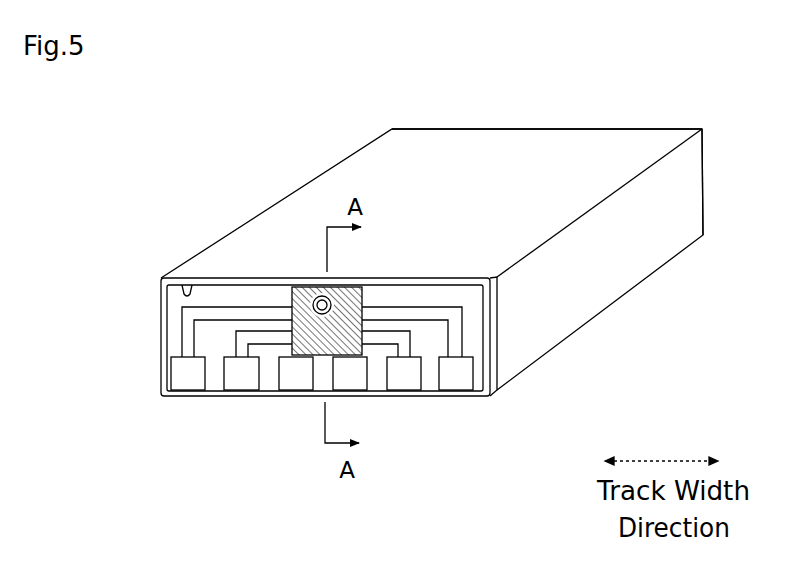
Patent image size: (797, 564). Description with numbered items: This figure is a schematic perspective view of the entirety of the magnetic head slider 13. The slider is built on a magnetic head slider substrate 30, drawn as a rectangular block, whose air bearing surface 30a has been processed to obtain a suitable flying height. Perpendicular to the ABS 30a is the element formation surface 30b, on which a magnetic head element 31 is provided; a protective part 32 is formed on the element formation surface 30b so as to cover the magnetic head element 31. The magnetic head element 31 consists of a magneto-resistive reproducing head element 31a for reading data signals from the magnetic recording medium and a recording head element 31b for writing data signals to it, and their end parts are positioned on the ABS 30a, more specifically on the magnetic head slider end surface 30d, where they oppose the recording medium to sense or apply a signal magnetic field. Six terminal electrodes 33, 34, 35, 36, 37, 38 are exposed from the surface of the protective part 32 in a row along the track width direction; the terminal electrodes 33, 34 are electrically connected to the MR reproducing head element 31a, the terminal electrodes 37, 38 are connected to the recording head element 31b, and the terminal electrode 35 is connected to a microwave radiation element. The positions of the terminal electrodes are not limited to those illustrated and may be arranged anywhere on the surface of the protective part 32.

The magnetic head slider 13 is at (488, 105).
The magnetic head slider substrate 30 is at (687, 188).
The air bearing surface 30a is at (348, 172).
The element formation surface 30b is at (186, 292).
The magnetic head slider end surface 30d is at (258, 277).
The magnetic head element 31 is at (399, 279).
The MR reproducing head element 31a is at (339, 276).
The recording head element 31b is at (351, 278).
The protective part 32 is at (497, 353).
The terminal electrode 33 is at (452, 397).
The terminal electrode 34 is at (403, 397).
The terminal electrode 35 is at (352, 397).
The terminal electrode 36 is at (282, 397).
The terminal electrode 37 is at (233, 397).
The terminal electrode 38 is at (182, 397).